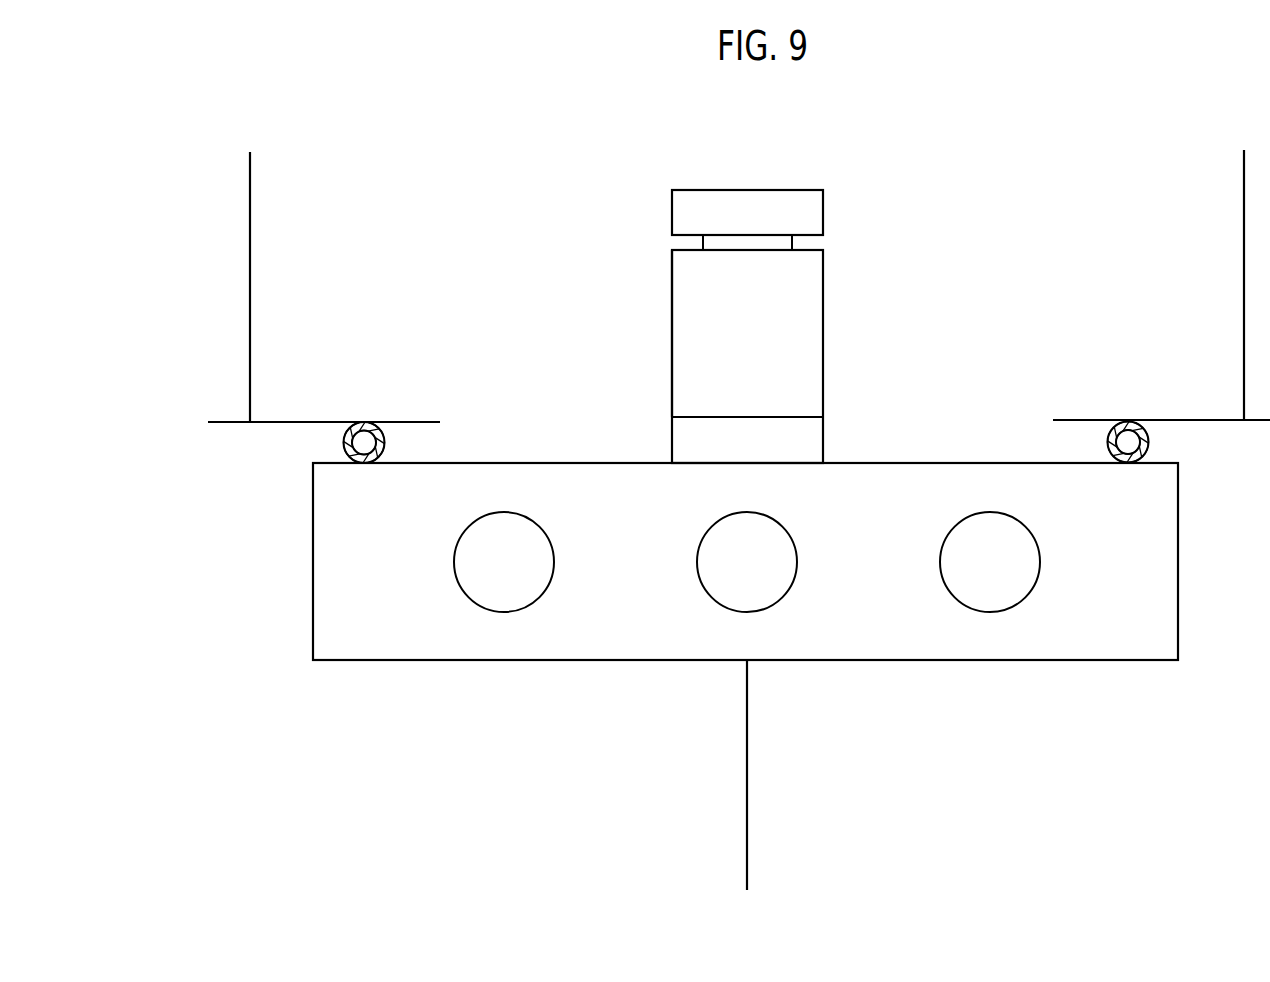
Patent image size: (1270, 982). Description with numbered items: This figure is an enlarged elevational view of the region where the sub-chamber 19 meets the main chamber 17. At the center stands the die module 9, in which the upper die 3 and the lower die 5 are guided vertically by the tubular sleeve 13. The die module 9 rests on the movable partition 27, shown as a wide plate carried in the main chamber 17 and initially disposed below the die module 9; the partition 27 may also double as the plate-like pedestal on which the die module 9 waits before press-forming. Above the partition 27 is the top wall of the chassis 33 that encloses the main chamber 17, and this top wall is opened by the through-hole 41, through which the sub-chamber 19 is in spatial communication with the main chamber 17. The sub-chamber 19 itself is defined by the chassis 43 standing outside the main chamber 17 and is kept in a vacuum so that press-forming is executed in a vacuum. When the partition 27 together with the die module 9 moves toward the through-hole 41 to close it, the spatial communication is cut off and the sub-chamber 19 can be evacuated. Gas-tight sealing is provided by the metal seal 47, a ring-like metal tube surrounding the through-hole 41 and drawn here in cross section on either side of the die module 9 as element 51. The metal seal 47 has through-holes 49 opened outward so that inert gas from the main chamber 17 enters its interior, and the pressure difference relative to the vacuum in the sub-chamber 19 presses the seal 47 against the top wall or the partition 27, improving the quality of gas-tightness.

The upper die 3 is at (823, 210).
The lower die 5 is at (823, 435).
The die module 9 is at (827, 335).
The sleeve 13 is at (672, 340).
The main chamber 17 is at (958, 750).
The sub-chamber 19 is at (1113, 275).
The movable partition 27 is at (625, 660).
The chassis 33 is at (270, 425).
The through-hole 41 is at (537, 412).
The chassis 43 is at (250, 252).
The metal seal 47 is at (388, 443).
The through-holes 49 is at (343, 443).
The roller 51 is at (364, 440).